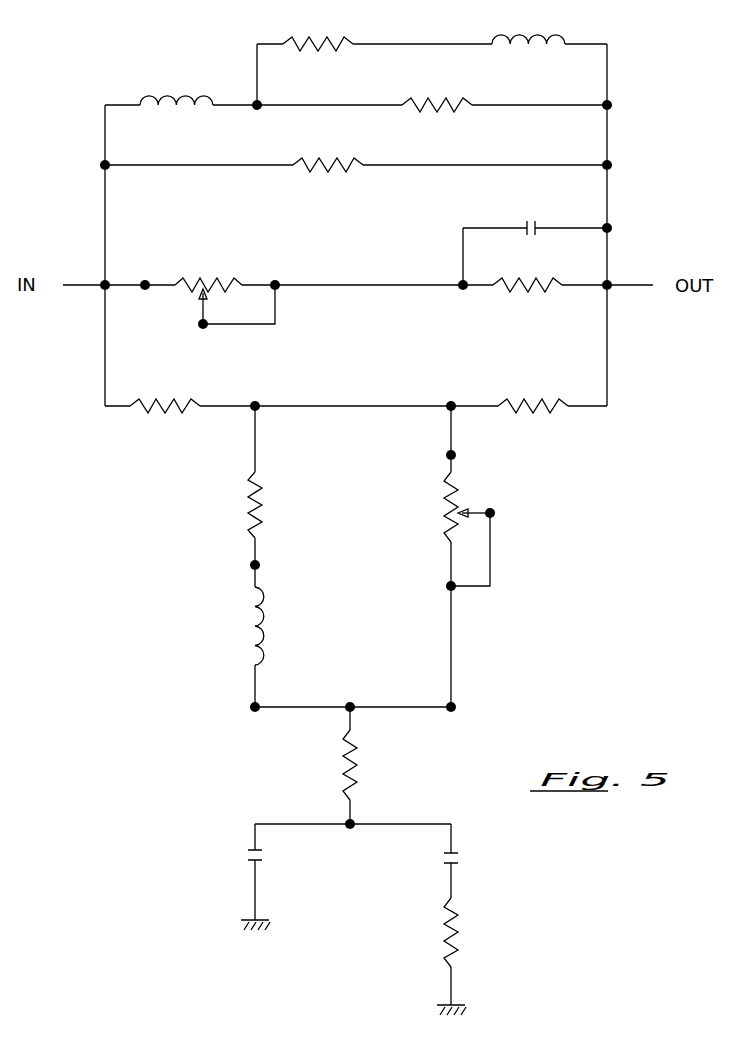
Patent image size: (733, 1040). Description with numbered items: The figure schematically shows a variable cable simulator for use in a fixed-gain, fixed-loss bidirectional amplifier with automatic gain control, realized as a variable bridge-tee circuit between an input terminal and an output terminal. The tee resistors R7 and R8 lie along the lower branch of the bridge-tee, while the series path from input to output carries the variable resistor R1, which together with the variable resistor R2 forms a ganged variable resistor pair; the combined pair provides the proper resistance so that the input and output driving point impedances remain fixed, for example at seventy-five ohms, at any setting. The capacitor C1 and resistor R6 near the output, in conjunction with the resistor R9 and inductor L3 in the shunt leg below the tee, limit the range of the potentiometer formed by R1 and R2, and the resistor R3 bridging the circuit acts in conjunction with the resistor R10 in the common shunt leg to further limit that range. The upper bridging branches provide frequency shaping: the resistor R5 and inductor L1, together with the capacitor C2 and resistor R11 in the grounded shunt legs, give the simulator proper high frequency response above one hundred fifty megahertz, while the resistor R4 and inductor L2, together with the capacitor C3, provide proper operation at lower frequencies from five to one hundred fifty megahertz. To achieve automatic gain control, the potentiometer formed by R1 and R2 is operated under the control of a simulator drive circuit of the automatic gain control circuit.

The inductor L1 is at (176, 82).
The inductor L2 is at (528, 27).
The inductor L3 is at (233, 626).
The variable resistor R1 is at (208, 287).
The variable resistor R2 is at (449, 507).
The resistor R3 is at (328, 150).
The resistor R4 is at (318, 27).
The resistor R5 is at (437, 91).
The resistor R6 is at (527, 274).
The tee resistor R7 is at (165, 391).
The tee resistor R8 is at (533, 391).
The resistor R9 is at (273, 505).
The resistor R10 is at (323, 765).
The resistor R11 is at (476, 932).
The capacitor C1 is at (530, 215).
The capacitor C2 is at (234, 856).
The capacitor C3 is at (473, 856).